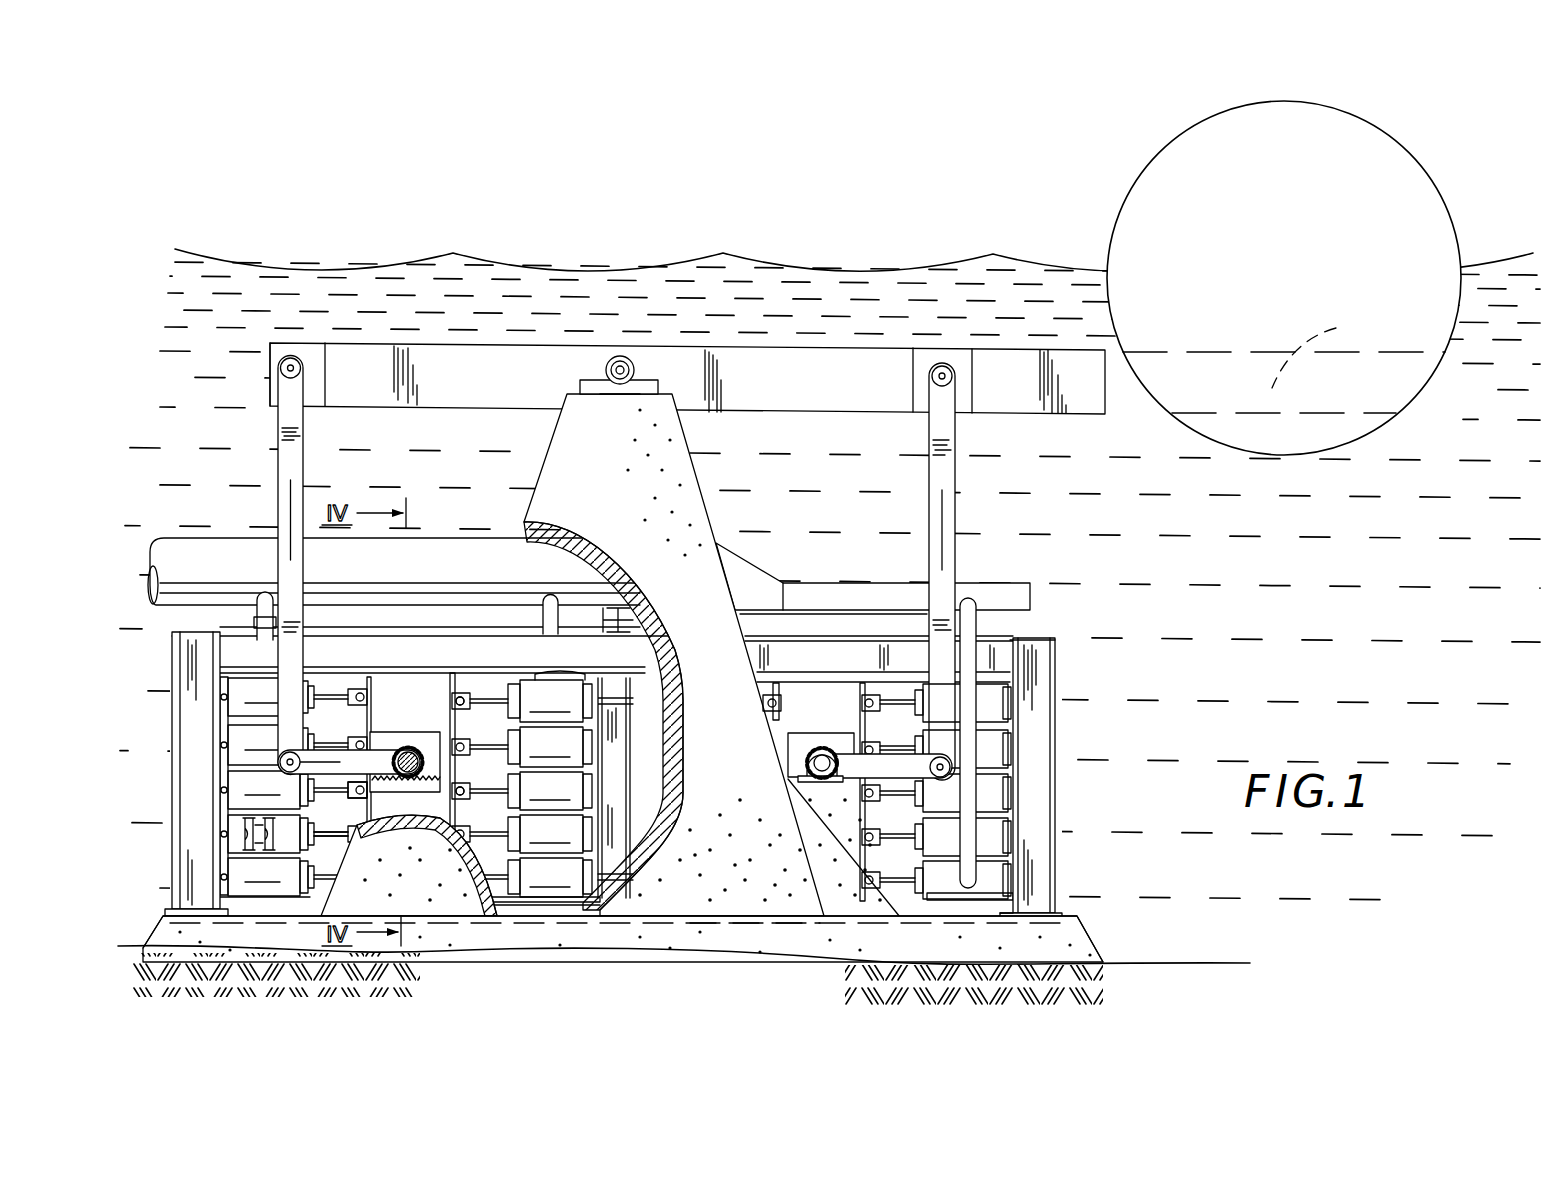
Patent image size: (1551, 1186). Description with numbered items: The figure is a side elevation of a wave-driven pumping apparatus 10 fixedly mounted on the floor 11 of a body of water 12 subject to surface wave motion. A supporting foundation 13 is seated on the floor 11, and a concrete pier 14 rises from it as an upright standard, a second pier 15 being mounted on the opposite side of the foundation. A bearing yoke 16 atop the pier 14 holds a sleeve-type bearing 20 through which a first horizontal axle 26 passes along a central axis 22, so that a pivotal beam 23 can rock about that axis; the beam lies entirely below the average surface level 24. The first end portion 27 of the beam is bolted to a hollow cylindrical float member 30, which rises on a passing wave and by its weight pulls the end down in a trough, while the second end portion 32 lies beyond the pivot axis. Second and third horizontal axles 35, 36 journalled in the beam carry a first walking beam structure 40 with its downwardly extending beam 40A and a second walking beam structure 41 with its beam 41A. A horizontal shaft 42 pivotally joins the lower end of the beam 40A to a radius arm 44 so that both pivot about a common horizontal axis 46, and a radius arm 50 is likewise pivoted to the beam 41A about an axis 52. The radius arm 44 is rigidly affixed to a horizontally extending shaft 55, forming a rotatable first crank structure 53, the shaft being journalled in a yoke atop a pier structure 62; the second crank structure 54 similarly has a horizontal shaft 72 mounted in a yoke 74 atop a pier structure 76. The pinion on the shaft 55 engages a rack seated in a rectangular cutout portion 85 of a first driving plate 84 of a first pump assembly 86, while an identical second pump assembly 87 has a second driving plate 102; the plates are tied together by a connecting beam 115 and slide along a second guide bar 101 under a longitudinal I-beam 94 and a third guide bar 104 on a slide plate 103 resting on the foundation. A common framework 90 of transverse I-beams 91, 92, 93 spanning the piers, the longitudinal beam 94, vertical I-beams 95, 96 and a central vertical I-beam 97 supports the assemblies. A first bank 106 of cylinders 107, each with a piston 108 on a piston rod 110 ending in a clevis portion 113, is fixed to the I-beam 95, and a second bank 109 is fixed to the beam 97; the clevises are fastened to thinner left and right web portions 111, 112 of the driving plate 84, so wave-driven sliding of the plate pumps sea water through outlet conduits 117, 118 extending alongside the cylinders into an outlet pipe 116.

The pumping apparatus 10 is at (216, 493).
The floor 11 is at (1120, 962).
The body of water 12 is at (372, 197).
The supporting foundation 13 is at (1060, 934).
The first concrete pier 14 is at (680, 454).
The second concrete pier 15 is at (490, 624).
The first bearing yoke 16 is at (580, 386).
The first bearing 20 is at (606, 369).
The central axis 22 is at (608, 395).
The pivotal beam 23 is at (784, 357).
The average surface level 24 is at (832, 272).
The first horizontal axle 26 is at (634, 368).
The first end portion 27 is at (1318, 348).
The float member 30 is at (1134, 180).
The second end portion 32 is at (270, 374).
The second horizontal axle 35 is at (301, 368).
The third horizontal axle 36 is at (953, 376).
The first walking beam structure 40 is at (308, 470).
The first walking beam 40A is at (304, 500).
The second walking beam structure 41 is at (958, 486).
The first walking beam of second structure 41A is at (959, 510).
The horizontal shaft 42 is at (281, 757).
The radius arm 44 is at (323, 751).
The common horizontal axis 46 is at (300, 770).
The radius arm 50 is at (896, 773).
The common horizontal axis 52 is at (950, 765).
The first crank structure 53 is at (425, 762).
The second crank structure 54 is at (820, 735).
The horizontally extending shaft 55 is at (410, 748).
The second pier structure 62 is at (327, 895).
The horizontal shaft 72 is at (822, 773).
The yoke 74 is at (808, 788).
The fifth pier structure 76 is at (905, 900).
The first driving plate 84 is at (466, 722).
The rectangular cutout portion 85 is at (377, 733).
The first pump assembly 86 is at (268, 900).
The second pump assembly 87 is at (962, 908).
The framework 90 is at (1060, 722).
The first transverse I-beam 91 is at (658, 625).
The second transverse I-beam 92 is at (626, 752).
The third transverse I-beam 93 is at (626, 861).
The longitudinal I-beam 94 is at (802, 664).
The first vertical I-beam 95 is at (196, 665).
The second vertical I-beam 96 is at (1040, 790).
The central vertical I-beam 97 is at (626, 799).
The second guide bar 101 is at (490, 676).
The second driving plate 102 is at (870, 737).
The slide plate 103 is at (803, 926).
The third guide bar 104 is at (532, 905).
The first bank of cylinders 106 is at (250, 898).
The cylinder 107 is at (235, 828).
The piston 108 is at (250, 855).
The second bank of cylinders 109 is at (555, 903).
The piston rod 110 is at (345, 840).
The left vertical web portion 111 is at (372, 699).
The right vertical web portion 112 is at (452, 690).
The clevis portion 113 is at (358, 798).
The connecting beam 115 is at (562, 678).
The outlet pipe 116 is at (256, 548).
The outlet conduits 117 is at (258, 604).
The outlet conduits 118 is at (276, 627).